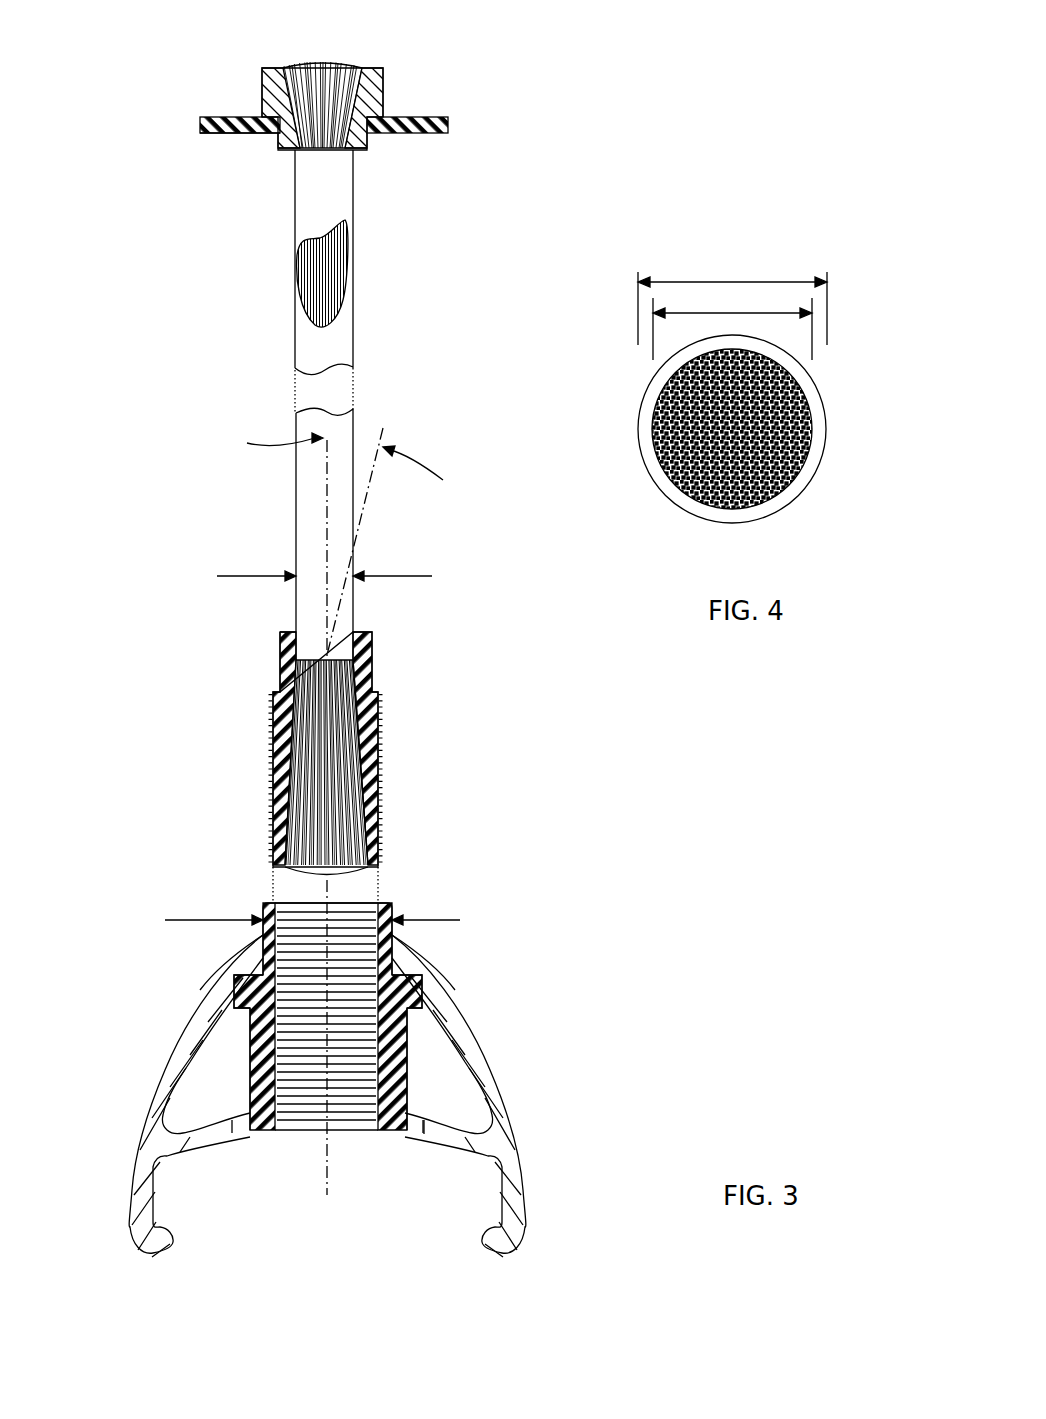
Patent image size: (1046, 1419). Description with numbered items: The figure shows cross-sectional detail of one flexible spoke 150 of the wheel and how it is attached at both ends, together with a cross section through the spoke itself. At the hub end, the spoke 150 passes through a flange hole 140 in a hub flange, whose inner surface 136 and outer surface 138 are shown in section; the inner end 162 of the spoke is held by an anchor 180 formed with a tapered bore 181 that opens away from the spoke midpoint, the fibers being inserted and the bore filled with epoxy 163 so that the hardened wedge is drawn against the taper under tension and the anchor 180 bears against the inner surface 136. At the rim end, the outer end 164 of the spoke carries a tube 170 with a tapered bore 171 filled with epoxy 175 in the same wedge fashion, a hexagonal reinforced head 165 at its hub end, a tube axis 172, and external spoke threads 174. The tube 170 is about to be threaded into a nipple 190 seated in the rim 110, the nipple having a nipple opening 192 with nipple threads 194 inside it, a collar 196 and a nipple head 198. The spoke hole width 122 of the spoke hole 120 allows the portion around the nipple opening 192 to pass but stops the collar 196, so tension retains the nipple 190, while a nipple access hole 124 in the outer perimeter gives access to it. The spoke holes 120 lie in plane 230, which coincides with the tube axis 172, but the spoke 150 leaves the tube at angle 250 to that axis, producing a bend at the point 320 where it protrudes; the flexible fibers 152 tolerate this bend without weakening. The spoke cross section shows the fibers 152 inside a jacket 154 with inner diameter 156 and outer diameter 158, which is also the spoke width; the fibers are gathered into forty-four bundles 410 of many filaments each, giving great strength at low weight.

In FIG. 3, the rim 110 is at (512, 1142).
In FIG. 3, the spoke hole 120 is at (263, 930).
In FIG. 3, the spoke hole width 122 is at (200, 918).
In FIG. 3, the nipple access hole 124 is at (428, 1130).
In FIG. 3, the inner surface 136 is at (215, 117).
In FIG. 3, the outer surface 138 is at (237, 135).
In FIG. 3, the flange hole 140 is at (278, 135).
In FIG. 3, the spoke 150 is at (220, 303).
In FIG. 4, the spoke 150 is at (862, 362).
In FIG. 3, the fibers 152 is at (330, 738).
In FIG. 4, the jacket 154 is at (650, 440).
In FIG. 4, the inner diameter 156 is at (700, 312).
In FIG. 3, the outer diameter 158 is at (227, 575).
In FIG. 4, the outer diameter 158 is at (745, 280).
In FIG. 3, the inner end 162 is at (325, 165).
In FIG. 3, the epoxy 163 is at (335, 65).
In FIG. 3, the outer end 164 is at (302, 647).
In FIG. 3, the reinforced head 165 is at (280, 675).
In FIG. 3, the tube 170 is at (273, 795).
In FIG. 3, the tapered bore 171 is at (352, 750).
In FIG. 3, the tube axis 172 is at (325, 1155).
In FIG. 3, the spoke threads 174 is at (377, 796).
In FIG. 3, the epoxy 175 is at (343, 873).
In FIG. 3, the anchor 180 is at (375, 110).
In FIG. 3, the tapered bore 181 is at (290, 97).
In FIG. 3, the nipple 190 is at (410, 1068).
In FIG. 3, the nipple opening 192 is at (287, 900).
In FIG. 3, the nipple threads 194 is at (337, 1070).
In FIG. 3, the collar 196 is at (415, 997).
In FIG. 3, the nipple head 198 is at (250, 1083).
In FIG. 3, the plane 230 is at (327, 489).
In FIG. 3, the angle 250 is at (252, 421).
In FIG. 3, the point 320 is at (362, 627).
In FIG. 4, the bundles 410 is at (668, 458).